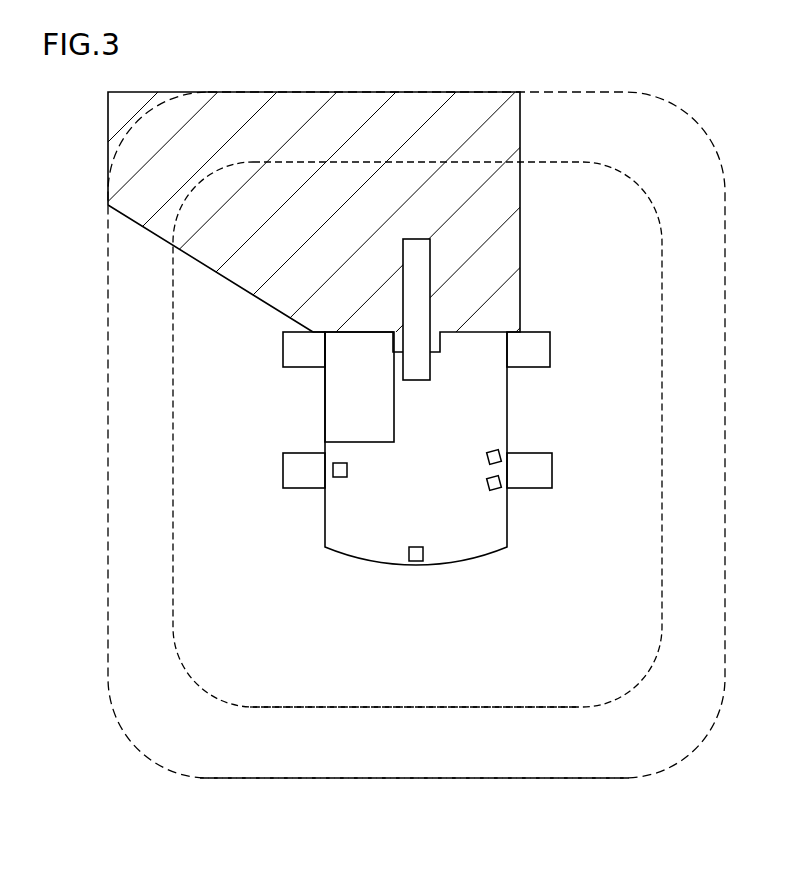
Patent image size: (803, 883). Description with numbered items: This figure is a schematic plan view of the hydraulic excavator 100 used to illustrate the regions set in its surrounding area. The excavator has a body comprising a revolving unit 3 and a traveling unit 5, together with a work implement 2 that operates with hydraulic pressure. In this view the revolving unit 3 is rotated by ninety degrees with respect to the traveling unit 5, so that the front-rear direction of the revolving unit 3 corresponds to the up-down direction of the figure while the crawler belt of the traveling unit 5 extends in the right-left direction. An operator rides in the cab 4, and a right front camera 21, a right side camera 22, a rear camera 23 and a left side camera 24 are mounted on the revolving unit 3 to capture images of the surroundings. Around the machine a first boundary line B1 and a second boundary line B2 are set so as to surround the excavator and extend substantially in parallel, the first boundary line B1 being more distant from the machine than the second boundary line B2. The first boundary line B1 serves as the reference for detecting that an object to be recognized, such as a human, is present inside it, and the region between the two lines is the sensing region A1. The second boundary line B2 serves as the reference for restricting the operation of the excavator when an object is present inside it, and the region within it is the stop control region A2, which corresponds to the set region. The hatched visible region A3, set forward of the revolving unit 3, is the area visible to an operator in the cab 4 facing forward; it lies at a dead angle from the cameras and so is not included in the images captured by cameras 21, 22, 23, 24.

The work implement 2 is at (421, 291).
The revolving unit 3 is at (470, 546).
The cab 4 is at (337, 403).
The traveling unit 5 is at (540, 470).
The right front camera 21 is at (498, 451).
The right side camera 22 is at (500, 490).
The rear camera 23 is at (416, 562).
The left side camera 24 is at (337, 479).
The hydraulic excavator 100 is at (514, 562).
The sensing region A1 is at (186, 719).
The stop control region A2 is at (247, 658).
The visible region A3 is at (334, 222).
The first boundary line B1 is at (298, 779).
The second boundary line B2 is at (358, 708).